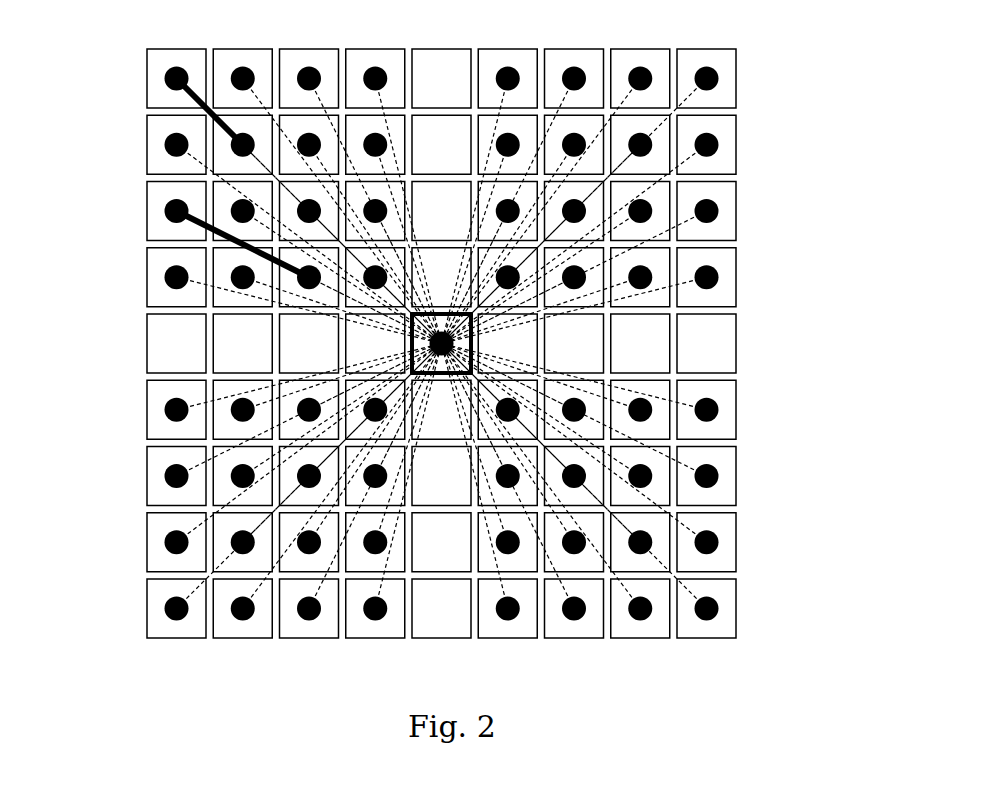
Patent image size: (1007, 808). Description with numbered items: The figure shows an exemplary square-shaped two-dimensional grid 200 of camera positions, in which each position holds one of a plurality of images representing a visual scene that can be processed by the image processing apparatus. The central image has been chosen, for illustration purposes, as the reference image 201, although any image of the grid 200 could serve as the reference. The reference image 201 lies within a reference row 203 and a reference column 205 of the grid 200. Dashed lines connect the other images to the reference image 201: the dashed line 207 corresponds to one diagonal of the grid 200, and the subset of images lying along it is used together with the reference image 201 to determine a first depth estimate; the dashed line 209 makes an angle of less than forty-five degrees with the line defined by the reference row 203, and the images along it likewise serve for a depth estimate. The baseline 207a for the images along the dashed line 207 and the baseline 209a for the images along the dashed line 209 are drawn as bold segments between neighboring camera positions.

The two-dimensional grid 200 is at (448, 340).
The reference image 201 is at (472, 343).
The reference row 203 is at (140, 315).
The reference column 205 is at (411, 40).
The dashed line 207 is at (671, 577).
The baseline 207a is at (205, 110).
The dashed line 209 is at (686, 468).
The baseline 209a is at (170, 223).